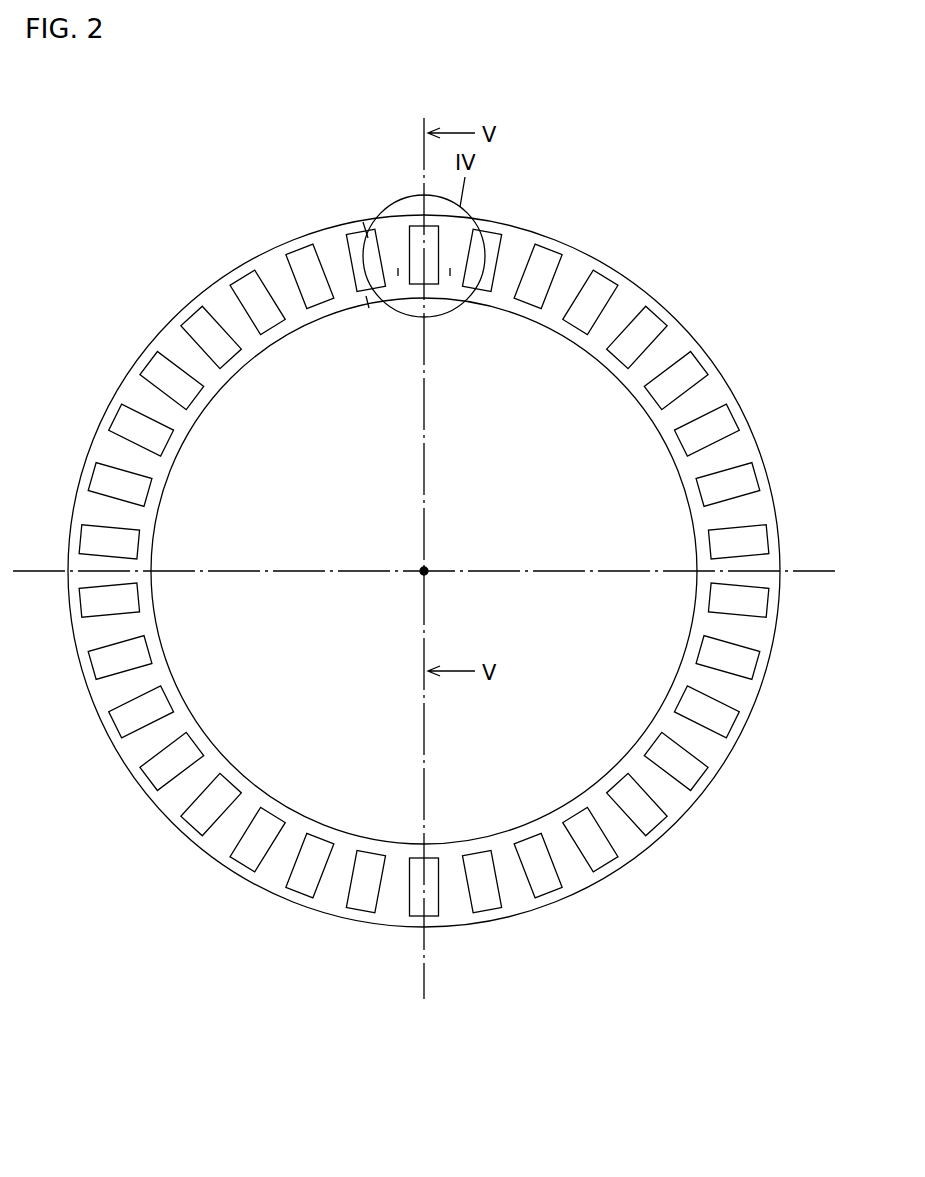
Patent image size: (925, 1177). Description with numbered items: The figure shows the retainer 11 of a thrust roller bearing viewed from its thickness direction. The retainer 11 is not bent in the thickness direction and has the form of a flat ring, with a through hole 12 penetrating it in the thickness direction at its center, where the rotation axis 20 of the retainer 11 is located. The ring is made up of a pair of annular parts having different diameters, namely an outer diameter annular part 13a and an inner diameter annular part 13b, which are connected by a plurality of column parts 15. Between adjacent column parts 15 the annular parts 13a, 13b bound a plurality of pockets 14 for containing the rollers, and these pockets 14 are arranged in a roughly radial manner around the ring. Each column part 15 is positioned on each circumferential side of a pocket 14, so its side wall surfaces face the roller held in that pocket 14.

The retainer 11 is at (589, 183).
The through hole 12 is at (647, 485).
The outer diameter annular part 13a is at (363, 228).
The inner diameter annular part 13b is at (365, 300).
The pocket 14 is at (355, 252).
The column part 15 is at (398, 272).
The rotation axis 20 is at (428, 574).